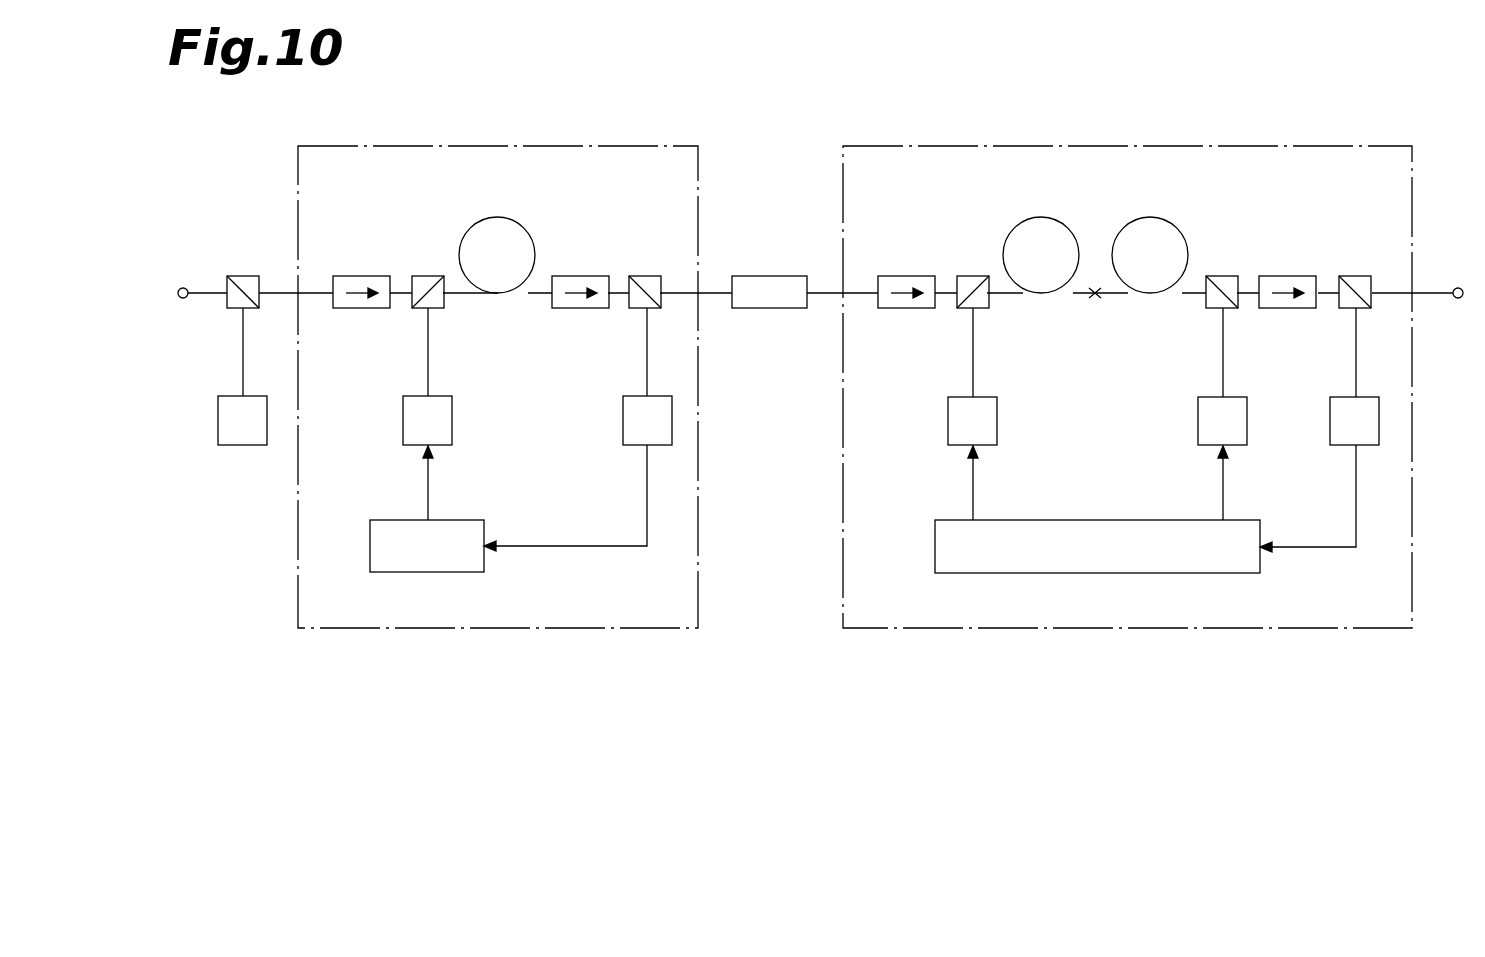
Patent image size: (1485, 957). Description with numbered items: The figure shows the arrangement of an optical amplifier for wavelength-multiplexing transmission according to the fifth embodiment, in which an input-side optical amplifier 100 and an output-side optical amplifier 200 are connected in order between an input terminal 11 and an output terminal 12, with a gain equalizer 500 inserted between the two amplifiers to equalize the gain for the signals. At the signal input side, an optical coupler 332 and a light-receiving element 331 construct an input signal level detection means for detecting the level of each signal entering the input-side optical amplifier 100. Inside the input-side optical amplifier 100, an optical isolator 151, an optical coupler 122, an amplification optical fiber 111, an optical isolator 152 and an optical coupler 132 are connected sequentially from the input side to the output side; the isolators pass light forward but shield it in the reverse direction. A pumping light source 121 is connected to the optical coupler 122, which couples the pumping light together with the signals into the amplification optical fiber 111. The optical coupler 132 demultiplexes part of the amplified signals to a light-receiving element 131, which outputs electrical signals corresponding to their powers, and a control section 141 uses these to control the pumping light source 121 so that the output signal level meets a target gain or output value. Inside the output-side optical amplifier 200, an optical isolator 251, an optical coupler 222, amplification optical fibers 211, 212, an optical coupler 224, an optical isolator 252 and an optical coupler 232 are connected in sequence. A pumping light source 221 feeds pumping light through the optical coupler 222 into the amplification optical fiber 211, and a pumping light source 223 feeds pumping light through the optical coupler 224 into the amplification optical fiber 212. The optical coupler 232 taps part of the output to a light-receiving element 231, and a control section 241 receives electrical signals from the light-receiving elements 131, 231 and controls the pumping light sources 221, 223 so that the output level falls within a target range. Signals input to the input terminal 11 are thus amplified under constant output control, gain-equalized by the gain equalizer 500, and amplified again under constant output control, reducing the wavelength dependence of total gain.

The input terminal 11 is at (184, 287).
The output terminal 12 is at (1458, 287).
The input-side optical amplifier 100 is at (458, 146).
The output-side optical amplifier 200 is at (1115, 146).
The gain equalizer 500 is at (765, 276).
The amplification optical fiber 111 is at (497, 217).
The pumping light source 121 is at (446, 446).
The optical coupler 122 is at (433, 309).
The light-receiving element 131 is at (625, 446).
The optical coupler 132 is at (642, 309).
The control section 141 is at (485, 526).
The optical isolator 151 is at (362, 276).
The optical isolator 152 is at (579, 276).
The amplification optical fiber 211 is at (1040, 217).
The amplification optical fiber 212 is at (1148, 217).
The pumping light source 221 is at (991, 446).
The optical coupler 222 is at (983, 309).
The pumping light source 223 is at (1201, 446).
The optical coupler 224 is at (1213, 309).
The light-receiving element 231 is at (1341, 446).
The optical coupler 232 is at (1346, 309).
The control section 241 is at (1067, 520).
The optical isolator 251 is at (907, 276).
The optical isolator 252 is at (1287, 276).
The light-receiving element 331 is at (227, 446).
The optical coupler 332 is at (233, 309).